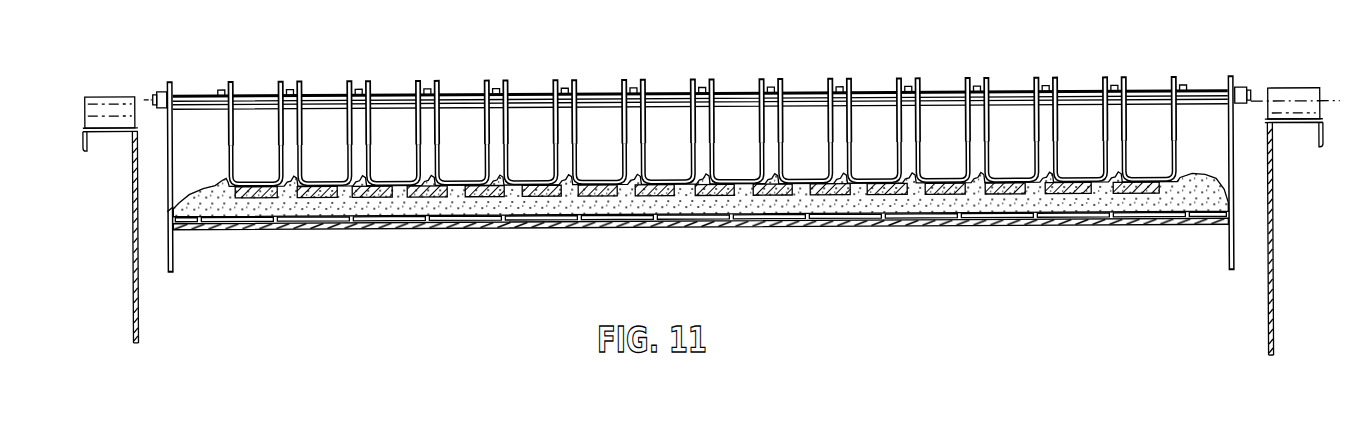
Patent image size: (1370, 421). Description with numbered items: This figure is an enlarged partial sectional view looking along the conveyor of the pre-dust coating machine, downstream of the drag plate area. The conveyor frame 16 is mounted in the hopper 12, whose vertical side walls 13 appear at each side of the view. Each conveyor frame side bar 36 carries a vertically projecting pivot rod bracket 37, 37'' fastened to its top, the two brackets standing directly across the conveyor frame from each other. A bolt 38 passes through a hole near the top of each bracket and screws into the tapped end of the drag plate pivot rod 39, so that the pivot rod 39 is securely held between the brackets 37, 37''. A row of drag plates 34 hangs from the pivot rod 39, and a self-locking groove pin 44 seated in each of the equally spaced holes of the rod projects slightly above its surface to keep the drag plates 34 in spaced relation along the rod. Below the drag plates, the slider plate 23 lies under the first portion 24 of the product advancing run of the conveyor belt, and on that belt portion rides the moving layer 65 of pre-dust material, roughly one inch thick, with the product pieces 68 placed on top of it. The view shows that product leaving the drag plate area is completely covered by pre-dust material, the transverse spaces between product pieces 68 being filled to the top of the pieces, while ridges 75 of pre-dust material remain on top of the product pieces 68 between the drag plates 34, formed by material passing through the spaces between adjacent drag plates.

The hopper 12 is at (627, 285).
The vertical side walls 13 is at (140, 310).
The conveyor frame 16 is at (178, 246).
The slider plate 23 is at (1148, 222).
The portion of the product advancing run 24 is at (1077, 203).
The drag plates 34 is at (386, 132).
The conveyor frame side bar 36 is at (173, 248).
The pivot rod bracket 37 is at (125, 147).
The pivot rod bracket 37'' is at (1282, 132).
The bolt 38 is at (158, 88).
The drag plate pivot rod 39 is at (190, 94).
The self-locking groove pin 44 is at (838, 88).
The layer of pre-dust material 65 is at (903, 205).
The product pieces 68 is at (303, 196).
The ridges of pre-dust material 75 is at (553, 184).